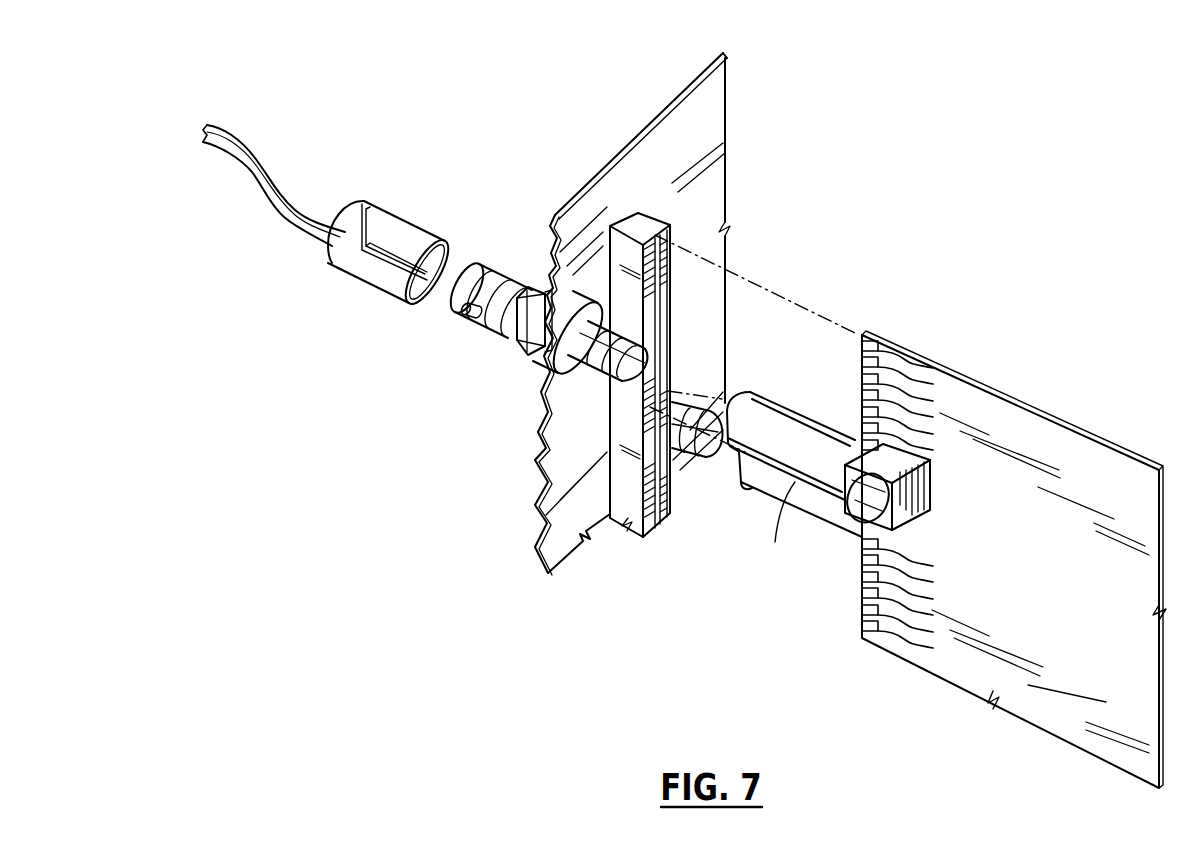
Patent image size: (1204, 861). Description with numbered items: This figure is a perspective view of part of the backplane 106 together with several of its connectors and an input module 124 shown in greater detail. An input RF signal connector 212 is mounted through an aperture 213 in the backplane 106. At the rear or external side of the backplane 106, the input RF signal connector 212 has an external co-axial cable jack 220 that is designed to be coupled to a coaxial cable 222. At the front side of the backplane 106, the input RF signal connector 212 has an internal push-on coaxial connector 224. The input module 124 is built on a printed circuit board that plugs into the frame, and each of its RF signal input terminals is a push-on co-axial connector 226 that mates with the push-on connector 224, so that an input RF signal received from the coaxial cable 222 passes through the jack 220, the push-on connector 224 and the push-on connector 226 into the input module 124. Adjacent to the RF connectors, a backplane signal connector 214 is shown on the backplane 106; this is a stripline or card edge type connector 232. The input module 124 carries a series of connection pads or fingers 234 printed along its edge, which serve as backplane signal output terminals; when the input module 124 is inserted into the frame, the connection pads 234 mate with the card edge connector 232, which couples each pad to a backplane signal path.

The backplane 106 is at (687, 122).
The input module 124 is at (1014, 517).
The input RF signal connector 212 is at (484, 273).
The aperture 213 is at (557, 366).
The backplane signal connector 214 is at (717, 311).
The external co-axial cable jack 220 is at (460, 310).
The coaxial cable 222 is at (352, 210).
The internal push-on coaxial connector 224 is at (597, 368).
The push-on co-axial connector 226 is at (783, 420).
The card edge connector 232 is at (653, 257).
The connection pads 234 is at (868, 355).